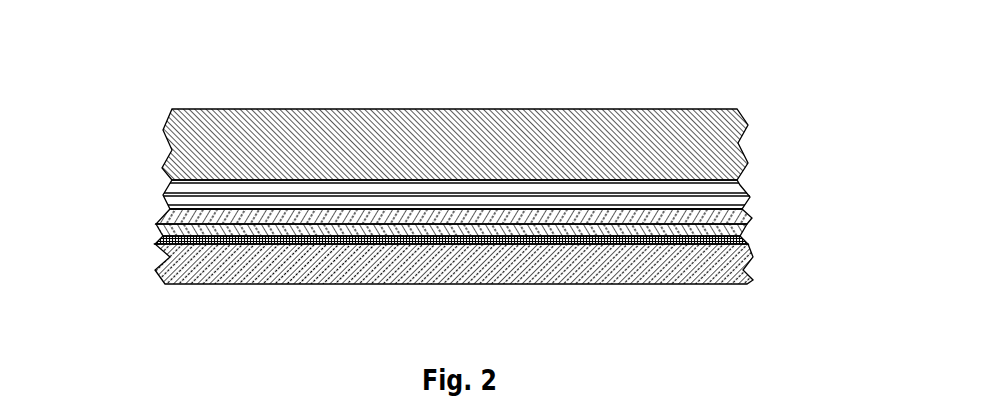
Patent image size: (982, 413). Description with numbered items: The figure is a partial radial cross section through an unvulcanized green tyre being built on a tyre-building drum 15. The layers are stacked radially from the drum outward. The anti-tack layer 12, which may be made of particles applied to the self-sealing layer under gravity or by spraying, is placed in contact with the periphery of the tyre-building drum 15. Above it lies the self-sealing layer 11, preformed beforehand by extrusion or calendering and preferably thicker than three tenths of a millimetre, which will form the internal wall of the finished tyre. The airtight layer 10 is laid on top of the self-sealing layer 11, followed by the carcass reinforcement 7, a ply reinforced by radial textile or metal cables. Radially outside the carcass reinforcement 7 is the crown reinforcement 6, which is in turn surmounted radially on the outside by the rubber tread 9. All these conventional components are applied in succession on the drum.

The rubber tread 9 is at (265, 147).
The crown reinforcement 6 is at (707, 197).
The carcass reinforcement 7 is at (232, 209).
The airtight layer 10 is at (180, 220).
The self-sealing layer 11 is at (713, 233).
The anti-tack layer 12 is at (226, 250).
The tyre-building drum 15 is at (597, 267).